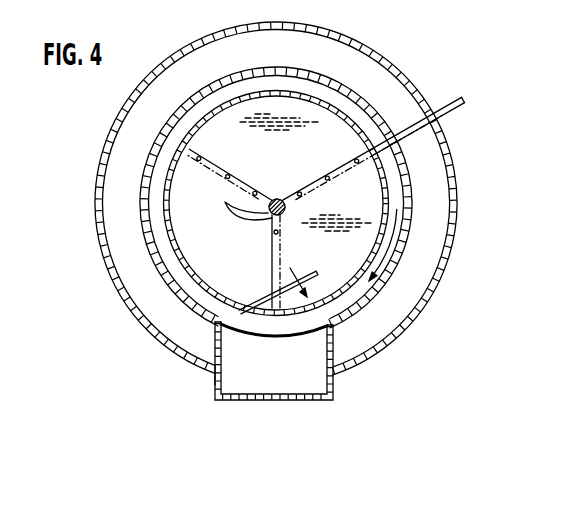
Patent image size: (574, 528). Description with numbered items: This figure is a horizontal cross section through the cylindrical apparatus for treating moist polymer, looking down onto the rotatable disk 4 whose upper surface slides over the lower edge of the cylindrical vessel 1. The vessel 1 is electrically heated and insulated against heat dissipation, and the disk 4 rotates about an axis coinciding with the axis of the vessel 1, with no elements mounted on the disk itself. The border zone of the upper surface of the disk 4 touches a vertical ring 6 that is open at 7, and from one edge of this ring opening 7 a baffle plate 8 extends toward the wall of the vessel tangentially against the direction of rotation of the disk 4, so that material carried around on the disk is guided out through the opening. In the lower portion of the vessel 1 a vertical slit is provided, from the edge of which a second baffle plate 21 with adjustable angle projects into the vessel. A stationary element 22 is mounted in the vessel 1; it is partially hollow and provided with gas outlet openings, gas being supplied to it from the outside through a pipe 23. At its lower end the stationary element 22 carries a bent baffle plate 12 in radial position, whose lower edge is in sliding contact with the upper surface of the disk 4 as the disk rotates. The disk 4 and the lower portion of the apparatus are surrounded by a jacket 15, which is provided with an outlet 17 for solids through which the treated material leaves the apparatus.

The vessel 1 is at (340, 110).
The rotatable disk 4 is at (390, 183).
The vertical ring 6 is at (331, 78).
The ring opening 7 is at (288, 338).
The baffle plate 8 is at (237, 330).
The bent baffle plate 12 is at (223, 212).
The jacket 15 is at (440, 280).
The outlet for solids 17 is at (213, 383).
The baffle plate 21 is at (316, 276).
The stationary element 22 is at (180, 157).
The pipe 23 is at (442, 116).